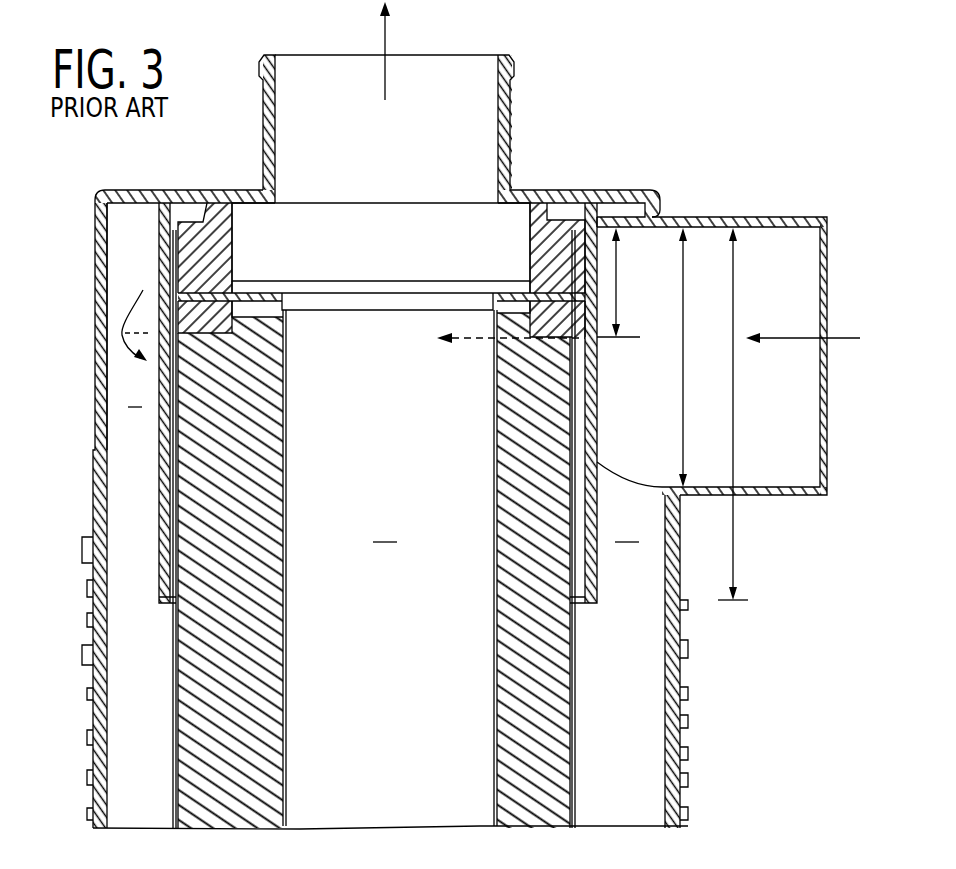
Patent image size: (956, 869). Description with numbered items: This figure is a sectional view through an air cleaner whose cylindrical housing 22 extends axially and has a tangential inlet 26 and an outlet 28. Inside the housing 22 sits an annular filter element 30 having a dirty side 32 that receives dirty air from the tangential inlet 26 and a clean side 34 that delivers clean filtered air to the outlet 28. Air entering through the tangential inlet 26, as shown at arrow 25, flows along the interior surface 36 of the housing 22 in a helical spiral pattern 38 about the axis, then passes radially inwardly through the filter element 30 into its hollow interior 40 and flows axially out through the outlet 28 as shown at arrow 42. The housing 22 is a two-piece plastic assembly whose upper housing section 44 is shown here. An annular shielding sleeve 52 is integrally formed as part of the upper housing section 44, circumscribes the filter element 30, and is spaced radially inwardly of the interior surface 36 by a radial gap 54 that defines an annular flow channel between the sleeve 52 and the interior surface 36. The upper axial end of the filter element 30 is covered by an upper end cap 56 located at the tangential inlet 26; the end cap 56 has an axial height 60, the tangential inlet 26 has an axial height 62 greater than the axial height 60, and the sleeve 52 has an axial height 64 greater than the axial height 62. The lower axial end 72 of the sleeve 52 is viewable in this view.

The housing 22 is at (95, 472).
The arrow 25 is at (843, 338).
The tangential inlet 26 is at (778, 220).
The outlet 28 is at (503, 74).
The annular filter element 30 is at (203, 672).
The dirty side 32 is at (172, 787).
The clean side 34 is at (287, 717).
The interior surface 36 is at (107, 278).
The helical spiral pattern 38 is at (353, 311).
The hollow interior 40 is at (387, 419).
The arrow 42 is at (383, 43).
The upper housing section 44 is at (96, 522).
The annular shielding sleeve 52 is at (158, 513).
The radial gap 54 is at (377, 462).
The upper axial end cap 56 is at (213, 228).
The axial height 60 is at (618, 305).
The axial height 62 is at (686, 356).
The axial height 64 is at (736, 410).
The lower axial end 72 is at (162, 607).